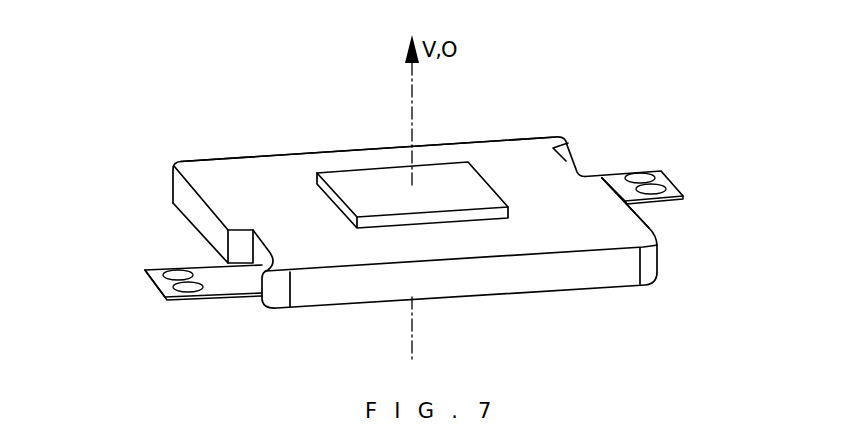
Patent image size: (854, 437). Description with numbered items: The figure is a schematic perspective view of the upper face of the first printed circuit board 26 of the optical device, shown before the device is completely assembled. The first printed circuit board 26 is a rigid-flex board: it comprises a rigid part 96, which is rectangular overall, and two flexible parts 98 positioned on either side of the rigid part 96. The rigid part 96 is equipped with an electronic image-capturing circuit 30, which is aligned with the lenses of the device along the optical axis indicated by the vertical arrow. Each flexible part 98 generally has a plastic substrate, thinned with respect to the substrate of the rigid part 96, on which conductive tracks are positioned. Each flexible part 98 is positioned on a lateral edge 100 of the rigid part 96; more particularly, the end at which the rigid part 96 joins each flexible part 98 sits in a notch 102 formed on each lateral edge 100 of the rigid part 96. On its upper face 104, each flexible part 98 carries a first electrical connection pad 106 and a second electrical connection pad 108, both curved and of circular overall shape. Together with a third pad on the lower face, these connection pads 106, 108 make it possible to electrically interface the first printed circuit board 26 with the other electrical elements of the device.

The first printed circuit board 26 is at (528, 103).
The electronic image-capturing circuit 30 is at (384, 179).
The rigid part 96 is at (288, 168).
The flexible part 98 is at (156, 304).
The lateral edge 100 is at (188, 197).
The notch 102 is at (262, 246).
The upper face 104 is at (176, 268).
The first electrical connection pad 106 is at (186, 284).
The second electrical connection pad 108 is at (153, 282).